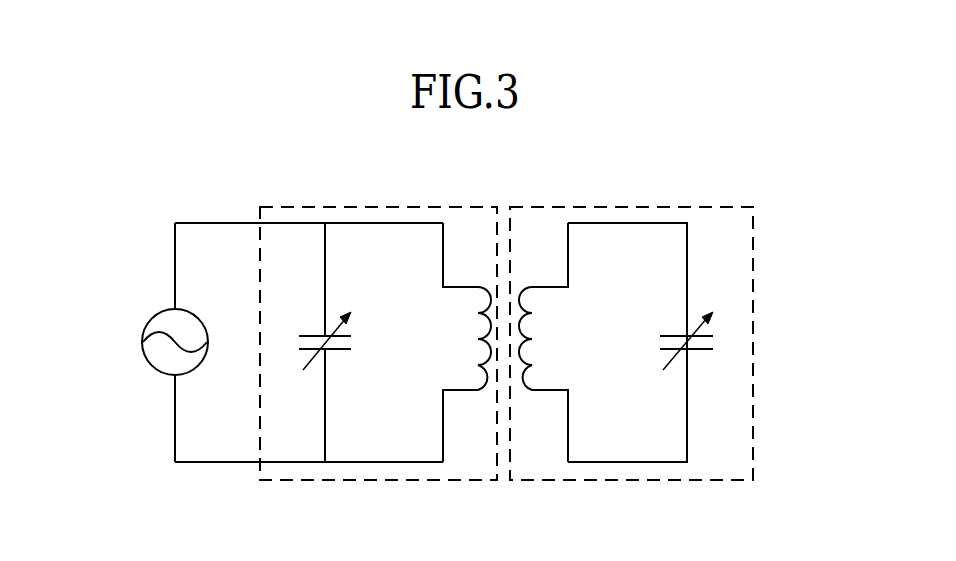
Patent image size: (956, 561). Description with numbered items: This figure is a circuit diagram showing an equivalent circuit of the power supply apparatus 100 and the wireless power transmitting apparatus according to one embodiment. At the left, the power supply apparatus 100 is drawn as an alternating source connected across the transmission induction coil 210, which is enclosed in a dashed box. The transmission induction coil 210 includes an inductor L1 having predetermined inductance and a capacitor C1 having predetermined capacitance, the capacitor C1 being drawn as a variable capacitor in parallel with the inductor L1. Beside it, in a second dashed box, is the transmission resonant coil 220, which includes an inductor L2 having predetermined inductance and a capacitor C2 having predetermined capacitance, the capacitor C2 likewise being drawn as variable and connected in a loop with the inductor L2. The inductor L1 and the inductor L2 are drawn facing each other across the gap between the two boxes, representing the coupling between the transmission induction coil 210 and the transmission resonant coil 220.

The power supply apparatus 100 is at (156, 310).
The transmission induction coil 210 is at (408, 205).
The transmission resonant coil 220 is at (573, 205).
The capacitor C1 is at (311, 342).
The inductor L1 is at (467, 342).
The inductor L2 is at (543, 342).
The capacitor C2 is at (702, 341).